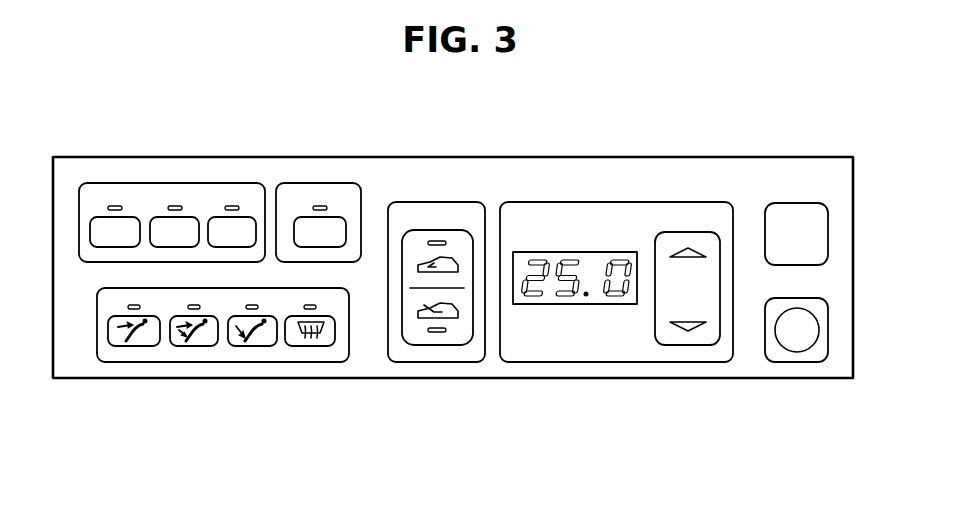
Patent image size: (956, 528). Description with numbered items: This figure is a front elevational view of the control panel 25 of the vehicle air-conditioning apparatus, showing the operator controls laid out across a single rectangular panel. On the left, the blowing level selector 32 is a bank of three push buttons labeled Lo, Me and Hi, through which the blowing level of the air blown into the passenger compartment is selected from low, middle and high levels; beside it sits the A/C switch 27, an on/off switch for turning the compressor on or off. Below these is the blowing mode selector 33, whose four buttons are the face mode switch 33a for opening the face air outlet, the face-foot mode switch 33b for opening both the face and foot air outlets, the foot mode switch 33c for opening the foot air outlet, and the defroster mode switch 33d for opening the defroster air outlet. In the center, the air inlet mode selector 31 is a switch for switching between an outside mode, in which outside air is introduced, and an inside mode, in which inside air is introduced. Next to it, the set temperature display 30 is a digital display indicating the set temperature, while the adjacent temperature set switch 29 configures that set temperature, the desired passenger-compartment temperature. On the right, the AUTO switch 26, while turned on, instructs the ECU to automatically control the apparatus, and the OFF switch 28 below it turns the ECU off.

The control panel 25 is at (81, 152).
The AUTO switch 26 is at (795, 213).
The A/C switch 27 is at (297, 218).
The OFF switch 28 is at (797, 346).
The temperature set switch 29 is at (708, 334).
The set temperature display 30 is at (592, 262).
The air inlet mode selector 31 is at (462, 336).
The blowing level selector 32 is at (133, 220).
The blowing mode selector 33 is at (223, 377).
The face mode switch 33a is at (137, 347).
The face-foot mode switch 33b is at (203, 347).
The foot mode switch 33c is at (258, 347).
The defroster mode switch 33d is at (312, 370).